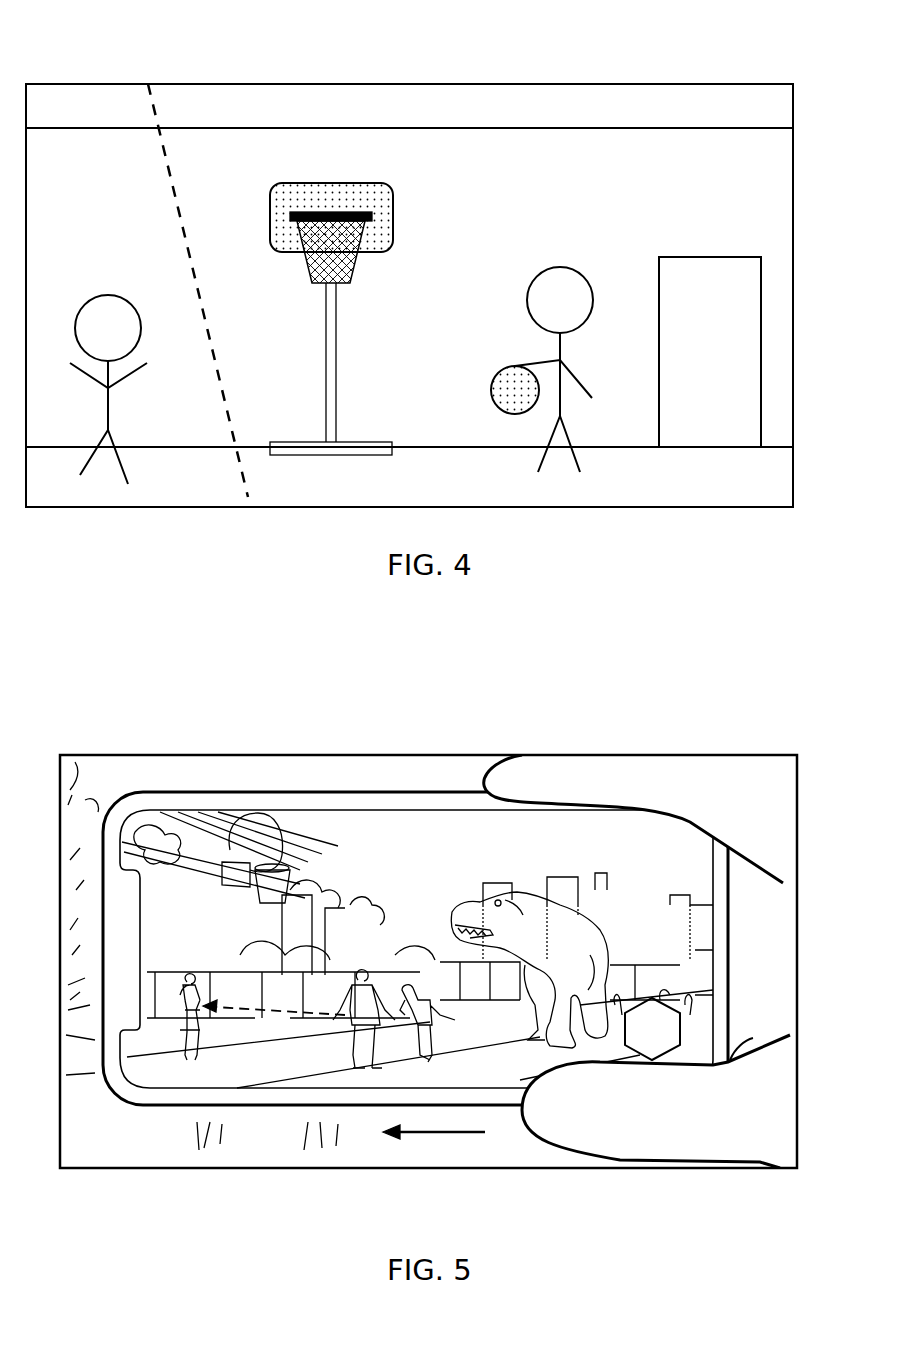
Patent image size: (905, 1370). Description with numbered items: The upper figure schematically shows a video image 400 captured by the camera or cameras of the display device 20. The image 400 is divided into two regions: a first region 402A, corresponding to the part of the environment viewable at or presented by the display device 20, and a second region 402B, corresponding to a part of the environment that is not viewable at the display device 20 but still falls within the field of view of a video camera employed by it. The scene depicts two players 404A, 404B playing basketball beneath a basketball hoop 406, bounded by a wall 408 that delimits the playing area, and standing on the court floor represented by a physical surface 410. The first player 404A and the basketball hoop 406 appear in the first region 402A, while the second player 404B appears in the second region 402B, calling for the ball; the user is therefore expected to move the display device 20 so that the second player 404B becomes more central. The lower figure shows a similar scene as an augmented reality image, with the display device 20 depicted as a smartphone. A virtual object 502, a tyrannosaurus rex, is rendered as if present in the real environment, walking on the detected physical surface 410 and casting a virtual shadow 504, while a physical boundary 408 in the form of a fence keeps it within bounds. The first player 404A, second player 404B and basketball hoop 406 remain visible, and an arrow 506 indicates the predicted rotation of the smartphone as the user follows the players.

In FIG. 4, the video image 400 is at (755, 82).
In FIG. 4, the first region 402A is at (483, 112).
In FIG. 4, the second region 402B is at (92, 108).
In FIG. 4, the first player 404A is at (587, 270).
In FIG. 5, the first player 404A is at (415, 1000).
In FIG. 4, the second player 404B is at (118, 295).
In FIG. 5, the second player 404B is at (187, 980).
In FIG. 4, the basketball hoop 406 is at (397, 213).
In FIG. 5, the basketball hoop 406 is at (257, 798).
In FIG. 4, the wall 408 is at (332, 124).
In FIG. 5, the wall 408 is at (330, 975).
In FIG. 4, the physical surface 410 is at (165, 490).
In FIG. 5, the physical surface 410 is at (293, 1072).
In FIG. 5, the display device 20 is at (160, 1105).
In FIG. 5, the virtual object 502 is at (495, 883).
In FIG. 5, the virtual shadow 504 is at (690, 1043).
In FIG. 5, the arrow 506 is at (430, 1135).